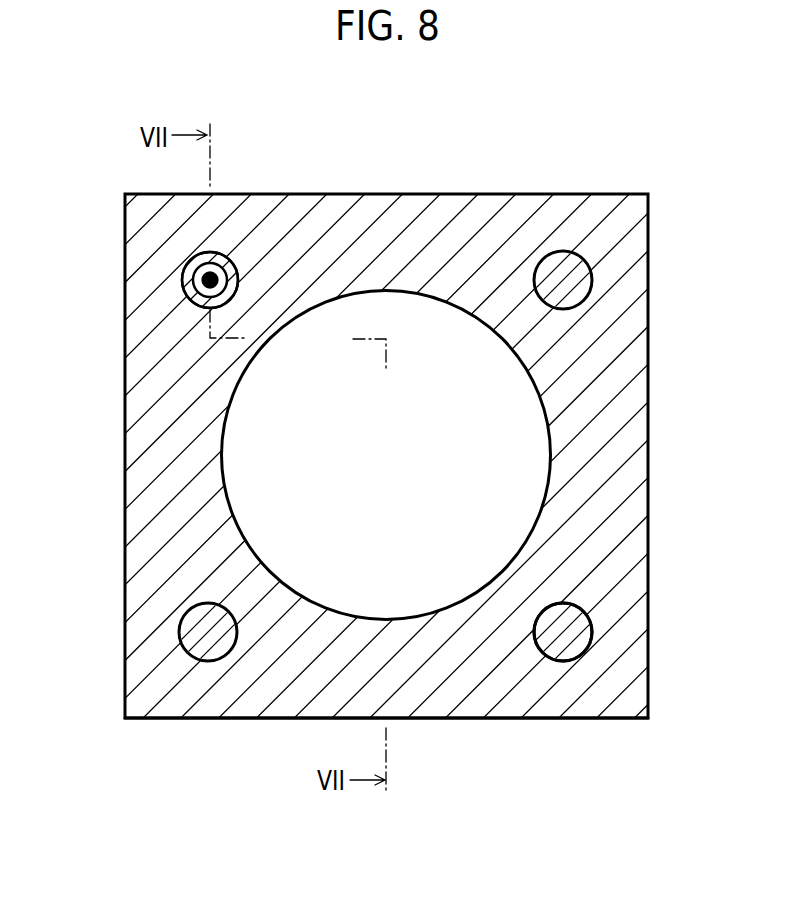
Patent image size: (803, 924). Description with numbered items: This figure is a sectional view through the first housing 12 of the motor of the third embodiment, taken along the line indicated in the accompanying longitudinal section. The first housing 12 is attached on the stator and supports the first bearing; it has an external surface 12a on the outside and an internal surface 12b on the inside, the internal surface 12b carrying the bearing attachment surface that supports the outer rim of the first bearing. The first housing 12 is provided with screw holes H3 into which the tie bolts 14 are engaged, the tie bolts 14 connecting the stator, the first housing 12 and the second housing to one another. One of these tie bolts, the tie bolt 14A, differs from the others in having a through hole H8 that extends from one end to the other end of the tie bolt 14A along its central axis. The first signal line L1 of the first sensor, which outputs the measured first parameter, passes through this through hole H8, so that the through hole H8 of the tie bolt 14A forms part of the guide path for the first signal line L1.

The first housing 12 is at (133, 370).
The external surface 12a is at (272, 719).
The internal surface 12b is at (224, 462).
The tie bolt 14 is at (580, 630).
The tie bolt having a through hole 14A is at (188, 287).
The screw hole H3 is at (190, 262).
The through hole H8 is at (217, 253).
The first signal line L1 is at (200, 281).